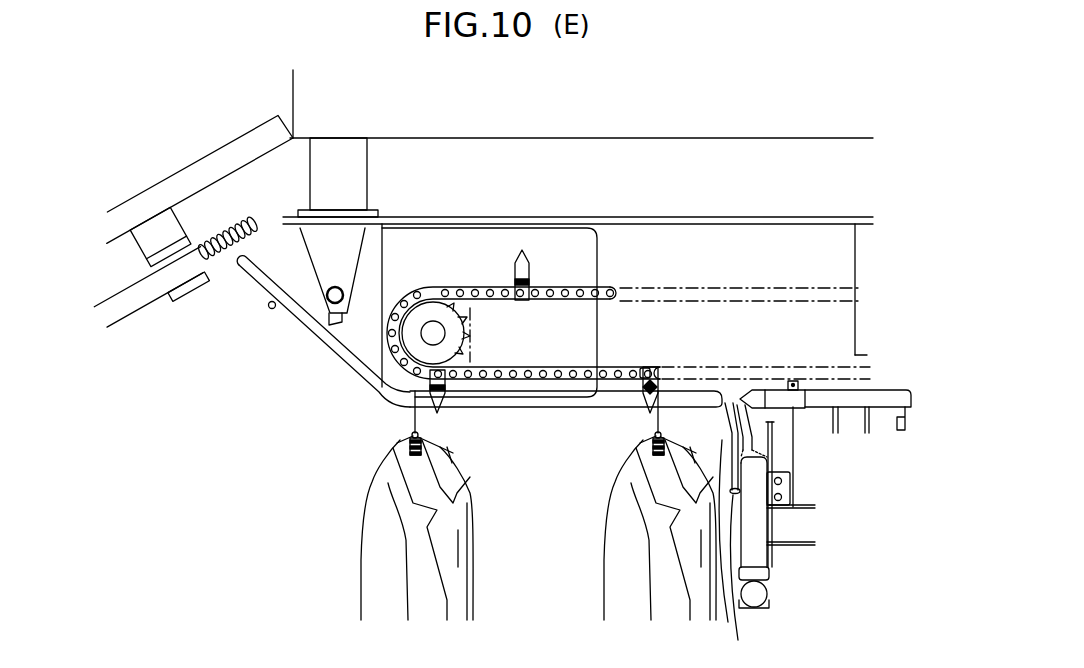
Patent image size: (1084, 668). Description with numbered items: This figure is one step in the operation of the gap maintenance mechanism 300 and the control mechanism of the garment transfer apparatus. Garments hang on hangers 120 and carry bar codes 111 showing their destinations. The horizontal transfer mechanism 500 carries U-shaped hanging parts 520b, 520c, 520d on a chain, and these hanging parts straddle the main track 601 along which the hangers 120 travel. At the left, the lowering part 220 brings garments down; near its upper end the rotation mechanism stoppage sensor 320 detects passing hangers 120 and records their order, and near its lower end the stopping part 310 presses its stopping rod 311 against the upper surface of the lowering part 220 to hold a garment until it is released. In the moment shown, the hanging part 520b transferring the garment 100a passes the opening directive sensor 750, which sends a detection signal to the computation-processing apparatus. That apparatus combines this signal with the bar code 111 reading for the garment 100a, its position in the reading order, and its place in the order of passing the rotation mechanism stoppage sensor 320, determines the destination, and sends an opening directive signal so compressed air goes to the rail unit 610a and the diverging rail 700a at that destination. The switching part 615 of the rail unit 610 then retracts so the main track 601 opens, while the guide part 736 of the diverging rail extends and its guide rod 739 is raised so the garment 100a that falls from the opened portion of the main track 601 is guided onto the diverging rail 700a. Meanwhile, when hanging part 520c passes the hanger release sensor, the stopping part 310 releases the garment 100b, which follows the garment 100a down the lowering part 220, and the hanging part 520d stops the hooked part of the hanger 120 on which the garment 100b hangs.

The horizontal transfer mechanism 500 is at (650, 186).
The gap maintenance mechanism 300 is at (293, 370).
The lowering part 220 is at (250, 250).
The rotation mechanism stoppage sensor 320 is at (268, 305).
The stopping part 310 is at (372, 253).
The stopping rod 311 is at (346, 314).
The main track 601 is at (623, 390).
The hanging part 520d is at (520, 252).
The hanging part 520c is at (441, 410).
The hanging part 520b is at (665, 384).
The opening directive sensor 750 is at (655, 366).
The rail unit 610 is at (557, 414).
The switching part 615 is at (752, 390).
The rail unit 610a is at (884, 390).
The hanger 120 is at (413, 423).
The bar code 111 is at (417, 442).
The garment 100b is at (362, 583).
The garment 100a is at (608, 577).
The guide part 736 is at (721, 613).
The guide rod 739 is at (767, 423).
The diverging rail 700a is at (768, 555).